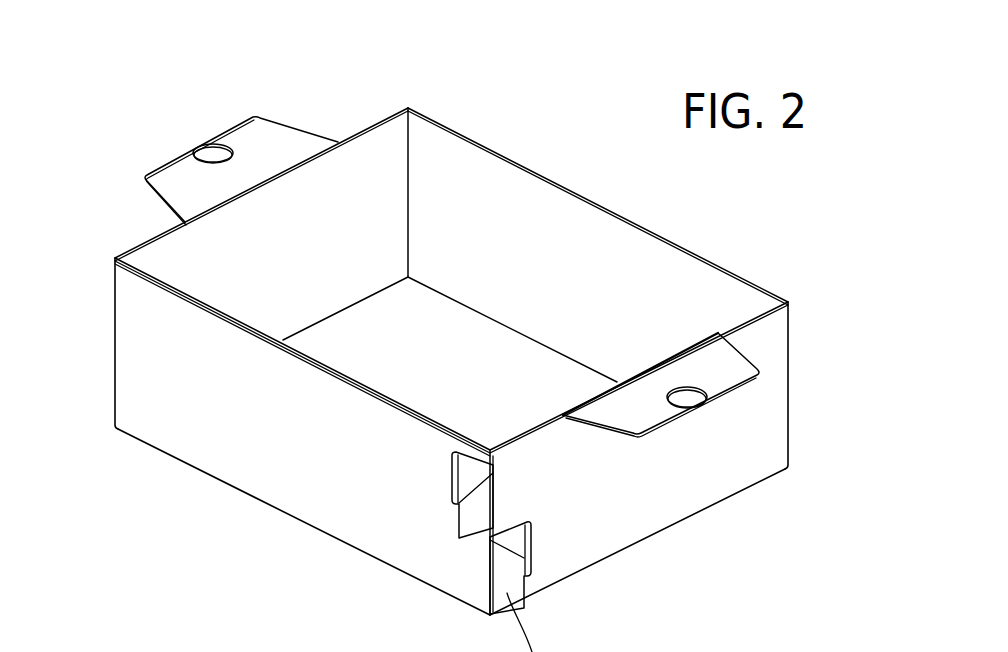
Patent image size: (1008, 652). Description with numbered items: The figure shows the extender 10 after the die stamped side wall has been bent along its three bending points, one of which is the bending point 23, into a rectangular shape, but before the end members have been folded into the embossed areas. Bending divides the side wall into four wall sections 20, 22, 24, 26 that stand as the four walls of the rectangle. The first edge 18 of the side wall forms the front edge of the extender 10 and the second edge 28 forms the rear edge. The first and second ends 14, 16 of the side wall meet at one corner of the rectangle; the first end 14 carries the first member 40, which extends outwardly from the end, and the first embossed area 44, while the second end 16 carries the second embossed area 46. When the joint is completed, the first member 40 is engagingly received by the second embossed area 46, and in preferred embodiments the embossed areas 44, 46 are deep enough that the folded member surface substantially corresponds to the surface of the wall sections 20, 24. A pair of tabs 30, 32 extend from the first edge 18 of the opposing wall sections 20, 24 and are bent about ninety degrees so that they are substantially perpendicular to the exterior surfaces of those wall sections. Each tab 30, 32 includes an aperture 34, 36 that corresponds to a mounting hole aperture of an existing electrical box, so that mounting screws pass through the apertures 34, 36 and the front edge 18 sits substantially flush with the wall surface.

The extender 10 is at (735, 224).
The first end 14 is at (540, 593).
The second end 16 is at (483, 607).
The first edge 18 is at (564, 186).
The wall section 20 is at (760, 432).
The wall section 22 is at (497, 198).
The bending point 23 is at (407, 183).
The wall section 24 is at (372, 168).
The wall section 26 is at (168, 370).
The second edge 28 is at (265, 503).
The tab 30 is at (674, 432).
The tab 32 is at (199, 130).
The aperture 34 is at (692, 397).
The aperture 36 is at (213, 150).
The first member 40 is at (478, 482).
The first embossed area 44 is at (515, 540).
The second embossed area 46 is at (467, 468).